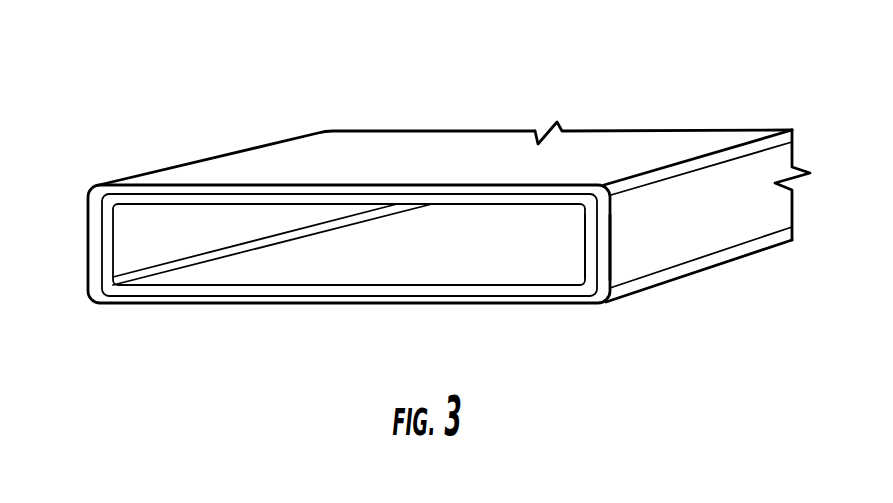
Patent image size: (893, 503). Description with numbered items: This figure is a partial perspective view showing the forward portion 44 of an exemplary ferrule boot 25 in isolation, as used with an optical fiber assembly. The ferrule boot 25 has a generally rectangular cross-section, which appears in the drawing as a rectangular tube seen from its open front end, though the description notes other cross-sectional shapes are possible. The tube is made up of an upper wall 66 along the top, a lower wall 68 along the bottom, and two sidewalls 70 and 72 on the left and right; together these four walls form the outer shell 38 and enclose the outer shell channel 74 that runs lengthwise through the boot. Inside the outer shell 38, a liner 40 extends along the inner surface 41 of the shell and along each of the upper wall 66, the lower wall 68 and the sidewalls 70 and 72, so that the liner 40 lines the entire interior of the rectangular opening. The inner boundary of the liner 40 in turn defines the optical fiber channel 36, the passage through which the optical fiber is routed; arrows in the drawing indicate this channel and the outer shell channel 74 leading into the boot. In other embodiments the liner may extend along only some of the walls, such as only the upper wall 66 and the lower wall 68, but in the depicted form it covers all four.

The ferrule boot 25 is at (415, 198).
The optical fiber channel 36 is at (427, 243).
The outer shell 38 is at (672, 139).
The liner 40 is at (152, 242).
The inner surface 41 is at (104, 268).
The forward portion 44 is at (316, 152).
The upper wall 66 is at (471, 143).
The lower wall 68 is at (440, 305).
The sidewall 70 is at (97, 243).
The sidewall 72 is at (603, 232).
The outer shell channel 74 is at (574, 263).